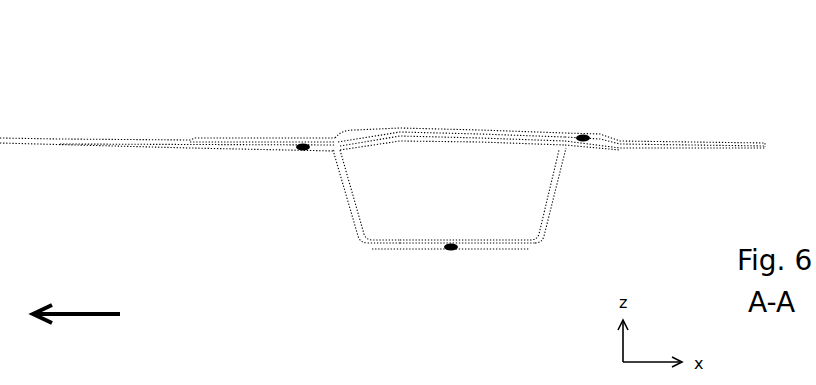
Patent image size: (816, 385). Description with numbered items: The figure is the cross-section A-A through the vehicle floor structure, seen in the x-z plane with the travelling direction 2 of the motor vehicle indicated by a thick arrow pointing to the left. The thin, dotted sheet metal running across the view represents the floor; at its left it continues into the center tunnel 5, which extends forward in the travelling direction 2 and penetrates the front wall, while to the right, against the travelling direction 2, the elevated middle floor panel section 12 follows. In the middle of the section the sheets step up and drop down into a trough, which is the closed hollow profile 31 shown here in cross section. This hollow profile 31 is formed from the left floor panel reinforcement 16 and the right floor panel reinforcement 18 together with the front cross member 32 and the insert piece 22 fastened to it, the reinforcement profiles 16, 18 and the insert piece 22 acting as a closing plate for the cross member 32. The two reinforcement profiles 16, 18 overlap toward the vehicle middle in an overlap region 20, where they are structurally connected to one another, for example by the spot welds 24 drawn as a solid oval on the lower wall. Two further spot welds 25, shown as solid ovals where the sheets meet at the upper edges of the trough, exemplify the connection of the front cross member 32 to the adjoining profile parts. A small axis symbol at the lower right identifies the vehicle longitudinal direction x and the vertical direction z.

The travelling direction 2 is at (79, 312).
The center tunnel 5 is at (82, 142).
The floor panel section 12 is at (670, 143).
The left floor panel reinforcement 16 is at (407, 137).
The right floor panel reinforcement 18 is at (338, 136).
The overlap region 20 is at (482, 112).
The insert piece 22 is at (349, 190).
The spot welds 24 is at (452, 252).
The spot welds 25 is at (303, 143).
The hollow profile 31 is at (469, 199).
The front cross member 32 is at (553, 197).